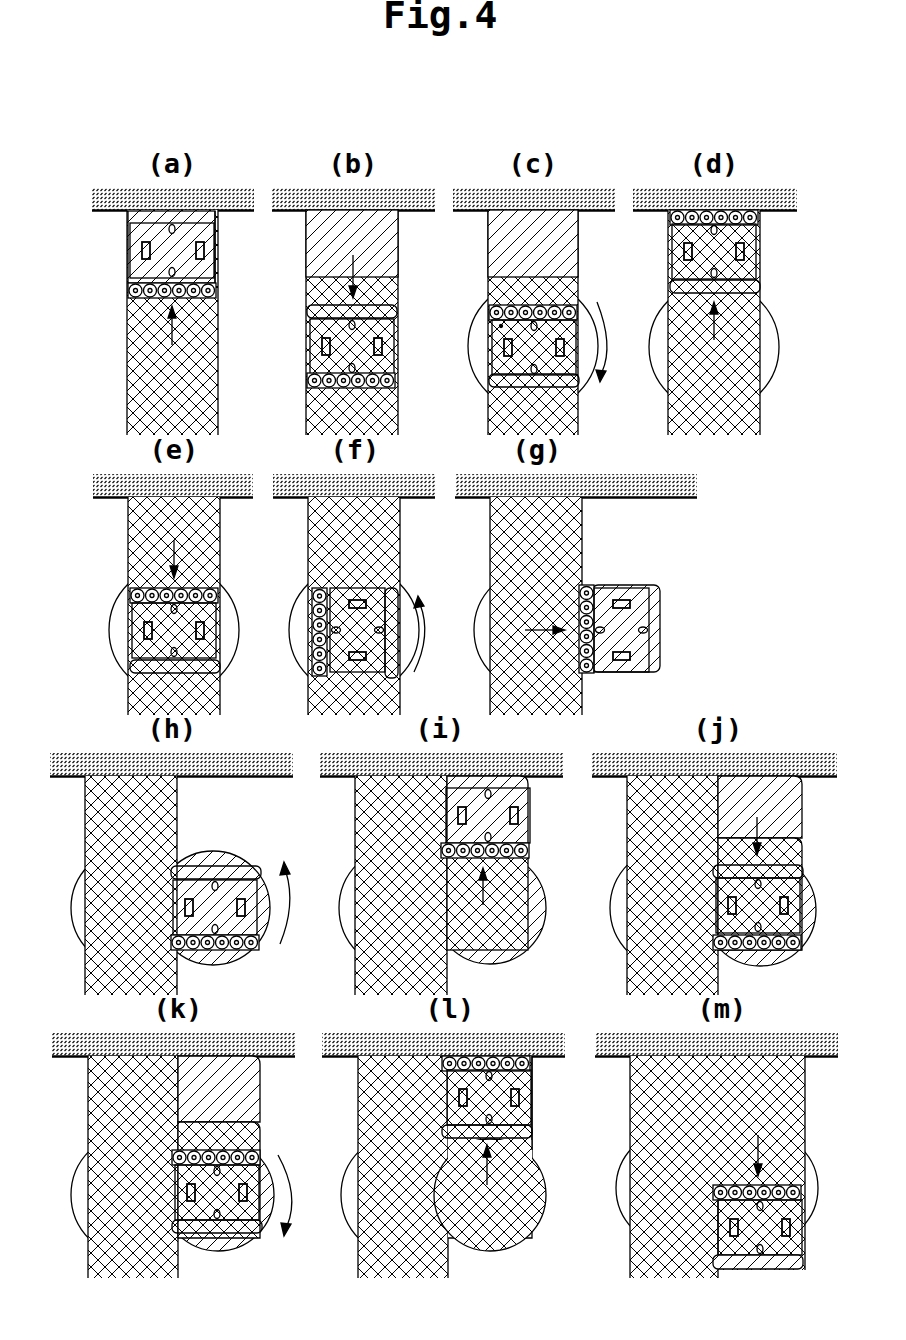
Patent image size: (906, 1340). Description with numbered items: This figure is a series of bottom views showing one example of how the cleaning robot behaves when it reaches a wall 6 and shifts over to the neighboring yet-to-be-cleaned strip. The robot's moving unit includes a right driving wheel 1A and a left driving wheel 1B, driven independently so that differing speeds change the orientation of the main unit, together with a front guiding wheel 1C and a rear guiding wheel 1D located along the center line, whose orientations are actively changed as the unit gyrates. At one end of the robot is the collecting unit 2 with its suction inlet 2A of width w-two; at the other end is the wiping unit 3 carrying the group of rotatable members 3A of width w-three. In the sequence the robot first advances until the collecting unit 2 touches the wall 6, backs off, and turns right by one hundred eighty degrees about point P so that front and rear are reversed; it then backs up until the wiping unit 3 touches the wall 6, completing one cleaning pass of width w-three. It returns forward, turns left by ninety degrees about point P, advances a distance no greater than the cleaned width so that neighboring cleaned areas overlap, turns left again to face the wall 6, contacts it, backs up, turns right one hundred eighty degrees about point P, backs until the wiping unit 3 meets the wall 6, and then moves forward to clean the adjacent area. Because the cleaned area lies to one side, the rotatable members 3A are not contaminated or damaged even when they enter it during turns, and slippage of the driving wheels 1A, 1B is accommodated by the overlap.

The right driving wheel 1A is at (207, 256).
The left driving wheel 1B is at (141, 253).
The front guiding wheel 1C is at (166, 231).
The rear guiding wheel 1D is at (166, 277).
The collecting unit 2 is at (218, 215).
The suction inlet 2A is at (217, 240).
The wiping unit 3 is at (216, 298).
The group of rotatable members 3A is at (214, 290).
The wall 6 is at (238, 212).
The point P is at (500, 326).